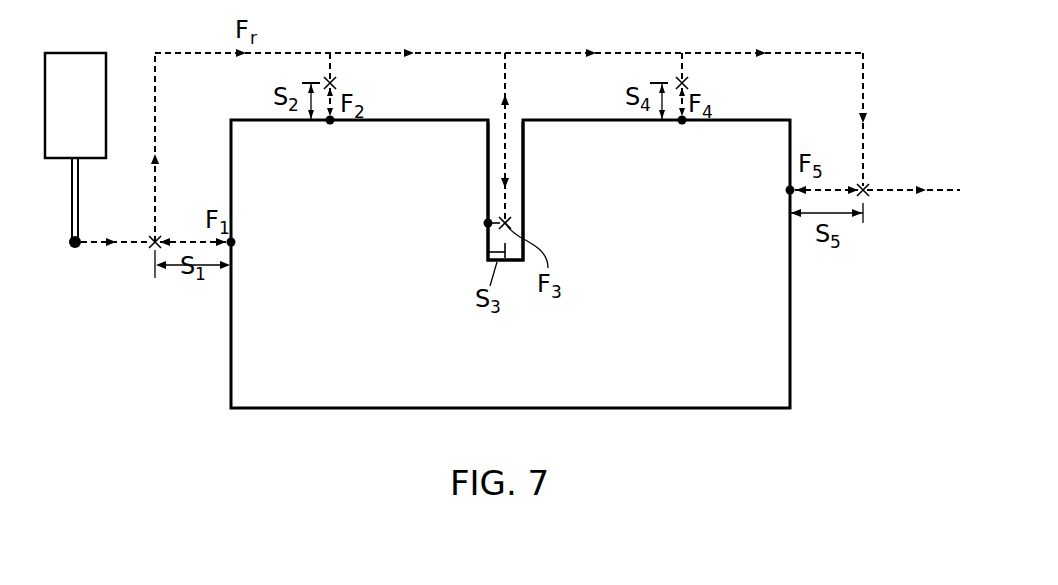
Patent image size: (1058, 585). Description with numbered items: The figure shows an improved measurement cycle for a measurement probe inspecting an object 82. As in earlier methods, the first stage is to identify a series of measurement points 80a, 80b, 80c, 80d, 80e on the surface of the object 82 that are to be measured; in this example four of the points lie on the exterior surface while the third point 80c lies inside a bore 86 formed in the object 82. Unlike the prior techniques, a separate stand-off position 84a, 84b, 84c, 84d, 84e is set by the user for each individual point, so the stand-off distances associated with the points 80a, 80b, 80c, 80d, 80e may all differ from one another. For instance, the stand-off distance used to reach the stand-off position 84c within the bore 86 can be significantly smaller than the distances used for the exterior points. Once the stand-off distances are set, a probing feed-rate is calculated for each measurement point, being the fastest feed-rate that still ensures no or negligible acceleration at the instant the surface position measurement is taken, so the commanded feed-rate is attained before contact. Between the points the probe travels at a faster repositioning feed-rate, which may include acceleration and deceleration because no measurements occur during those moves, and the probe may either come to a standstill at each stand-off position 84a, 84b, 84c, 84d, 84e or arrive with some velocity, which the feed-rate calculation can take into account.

The measurement point 80a is at (231, 242).
The measurement point 80b is at (331, 121).
The measurement point 80c is at (488, 224).
The measurement point 80d is at (683, 121).
The measurement point 80e is at (790, 190).
The object 82 is at (375, 334).
The stand-off position 84a is at (155, 245).
The stand-off position 84b is at (334, 84).
The stand-off position 84c is at (510, 223).
The stand-off position 84d is at (686, 84).
The stand-off position 84e is at (866, 195).
The bore 86 is at (523, 140).